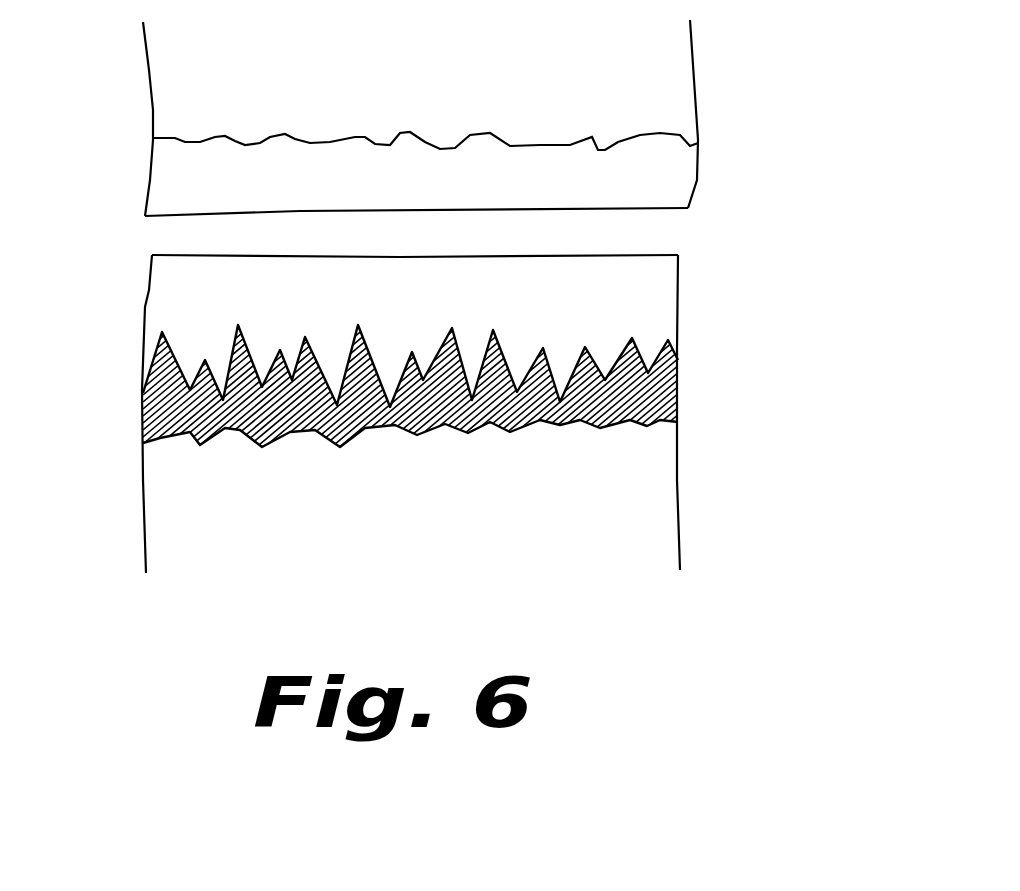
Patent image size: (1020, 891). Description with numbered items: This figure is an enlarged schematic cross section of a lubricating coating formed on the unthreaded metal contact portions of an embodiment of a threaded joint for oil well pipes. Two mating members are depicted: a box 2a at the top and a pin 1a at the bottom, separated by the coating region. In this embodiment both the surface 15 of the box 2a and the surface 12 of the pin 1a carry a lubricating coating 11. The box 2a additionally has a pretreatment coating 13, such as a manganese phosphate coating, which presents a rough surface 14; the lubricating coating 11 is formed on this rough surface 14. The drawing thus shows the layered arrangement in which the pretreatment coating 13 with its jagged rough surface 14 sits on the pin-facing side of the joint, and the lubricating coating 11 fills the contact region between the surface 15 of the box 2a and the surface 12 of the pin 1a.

The box 2a is at (632, 73).
The surface of box 15 is at (637, 142).
The lubricating coating 11 is at (640, 297).
The pin 1a is at (247, 528).
The pretreatment coating 13 is at (200, 412).
The rough surface 14 is at (227, 342).
The surface of pin 12 is at (227, 447).